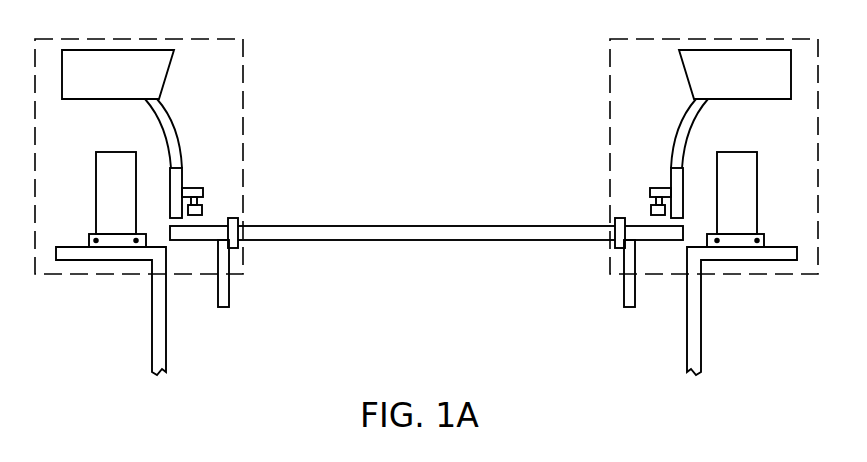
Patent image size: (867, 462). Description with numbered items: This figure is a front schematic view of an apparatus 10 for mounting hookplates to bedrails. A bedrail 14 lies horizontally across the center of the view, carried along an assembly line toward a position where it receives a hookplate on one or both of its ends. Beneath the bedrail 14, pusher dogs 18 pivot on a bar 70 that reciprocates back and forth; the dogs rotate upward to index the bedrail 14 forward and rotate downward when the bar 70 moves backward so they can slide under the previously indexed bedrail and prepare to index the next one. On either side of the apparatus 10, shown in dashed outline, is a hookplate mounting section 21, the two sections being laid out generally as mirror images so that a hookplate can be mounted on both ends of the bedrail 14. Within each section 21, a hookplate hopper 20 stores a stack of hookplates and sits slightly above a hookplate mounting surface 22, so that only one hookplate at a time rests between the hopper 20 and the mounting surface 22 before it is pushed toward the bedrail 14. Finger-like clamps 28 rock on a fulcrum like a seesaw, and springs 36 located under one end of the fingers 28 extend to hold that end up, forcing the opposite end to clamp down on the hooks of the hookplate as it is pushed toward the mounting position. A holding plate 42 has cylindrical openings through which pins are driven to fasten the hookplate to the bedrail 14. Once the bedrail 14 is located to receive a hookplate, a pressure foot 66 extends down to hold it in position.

The apparatus for mounting a hookplate to a bedrail 10 is at (393, 24).
The bedrail 14 is at (392, 234).
The pusher dog 18 is at (238, 248).
The hookplate hopper 20 is at (108, 152).
The hookplate mounting section 21 is at (75, 37).
The hookplate mounting surface 22 is at (219, 224).
The finger-like clamp 28 is at (88, 238).
The spring 36 is at (168, 75).
The holding plate 42 is at (180, 173).
The pressure foot 66 is at (202, 209).
The bar 70 is at (225, 308).